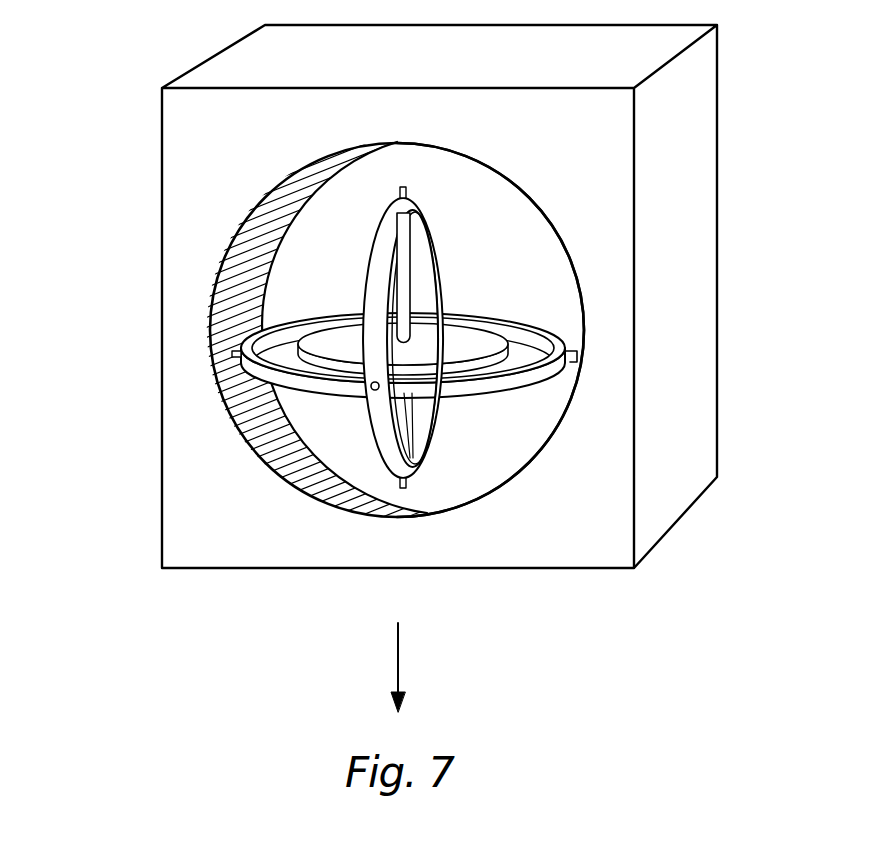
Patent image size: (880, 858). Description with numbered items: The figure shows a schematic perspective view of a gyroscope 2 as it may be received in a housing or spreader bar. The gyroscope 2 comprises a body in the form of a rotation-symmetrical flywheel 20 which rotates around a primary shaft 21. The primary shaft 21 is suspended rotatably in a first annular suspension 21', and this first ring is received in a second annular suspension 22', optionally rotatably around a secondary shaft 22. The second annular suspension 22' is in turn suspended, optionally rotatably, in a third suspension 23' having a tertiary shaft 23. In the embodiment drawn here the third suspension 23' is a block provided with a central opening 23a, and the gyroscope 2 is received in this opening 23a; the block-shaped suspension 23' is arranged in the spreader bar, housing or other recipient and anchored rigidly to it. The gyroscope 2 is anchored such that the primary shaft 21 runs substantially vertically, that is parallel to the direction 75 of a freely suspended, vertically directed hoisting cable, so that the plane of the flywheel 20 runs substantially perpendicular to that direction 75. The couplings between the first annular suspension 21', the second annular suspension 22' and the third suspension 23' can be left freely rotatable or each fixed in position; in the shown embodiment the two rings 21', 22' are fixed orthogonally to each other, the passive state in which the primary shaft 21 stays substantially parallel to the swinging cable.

The gyroscope 2 is at (120, 78).
The flywheel 20 is at (457, 340).
The primary shaft 21 is at (470, 323).
The first annular suspension 21' is at (336, 296).
The secondary shaft 22 is at (398, 434).
The second annular suspension 22' is at (375, 436).
The tertiary shaft 23 is at (413, 330).
The third suspension 23' is at (242, 330).
The central opening 23a is at (535, 272).
The direction of a freely suspended hoisting cable 75 is at (398, 660).